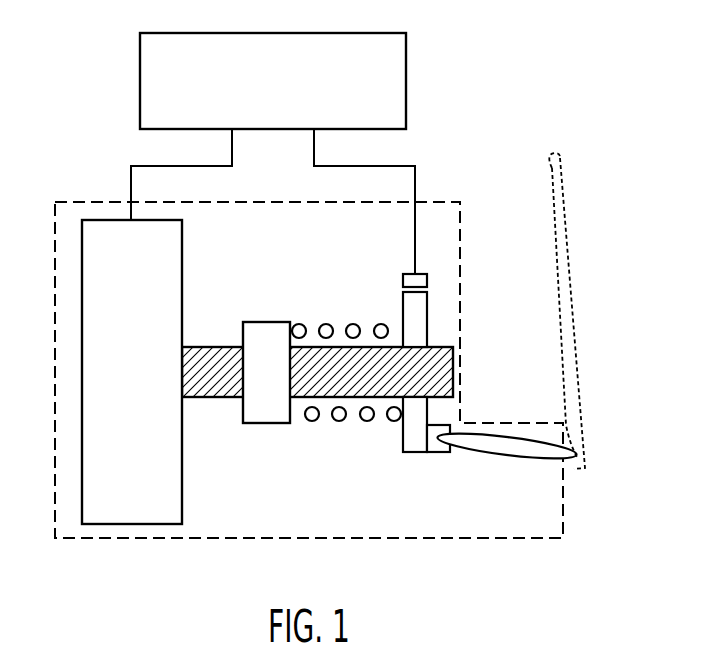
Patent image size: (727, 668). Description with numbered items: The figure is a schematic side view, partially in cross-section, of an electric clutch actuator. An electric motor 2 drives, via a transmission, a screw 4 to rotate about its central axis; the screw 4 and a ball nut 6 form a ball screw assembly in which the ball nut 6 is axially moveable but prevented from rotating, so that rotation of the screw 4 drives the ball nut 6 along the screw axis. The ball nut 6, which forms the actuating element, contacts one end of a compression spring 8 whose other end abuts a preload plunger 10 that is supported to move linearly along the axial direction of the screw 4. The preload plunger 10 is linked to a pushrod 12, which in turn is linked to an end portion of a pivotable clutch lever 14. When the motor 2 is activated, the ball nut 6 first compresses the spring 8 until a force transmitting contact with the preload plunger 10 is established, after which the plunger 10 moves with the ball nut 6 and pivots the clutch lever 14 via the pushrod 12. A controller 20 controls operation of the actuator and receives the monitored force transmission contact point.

The electric motor 2 is at (141, 388).
The screw 4 is at (206, 398).
The ball nut 6 is at (277, 386).
The compression spring 8 is at (339, 421).
The preload plunger 10 is at (417, 453).
The pushrod 12 is at (497, 456).
The clutch lever 14 is at (577, 333).
The controller 20 is at (287, 96).